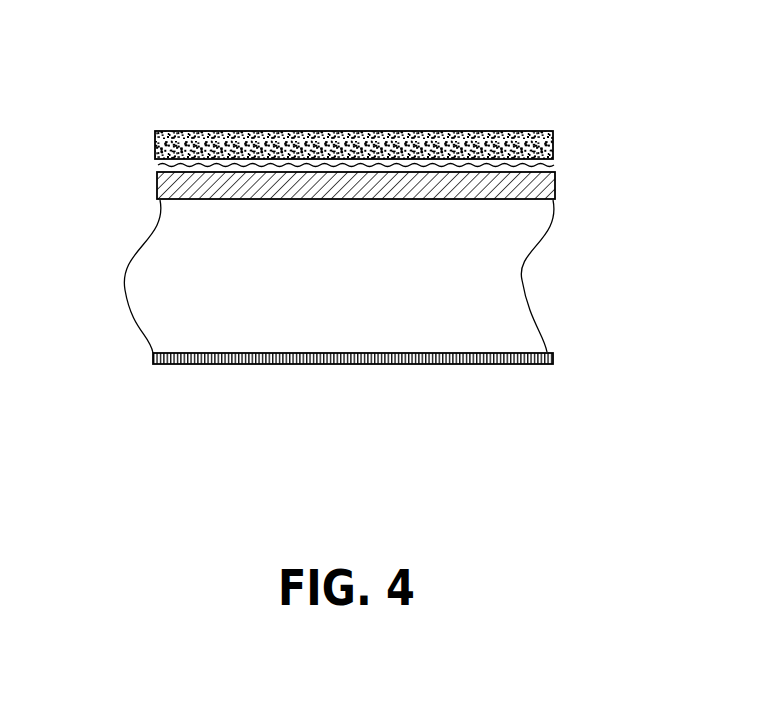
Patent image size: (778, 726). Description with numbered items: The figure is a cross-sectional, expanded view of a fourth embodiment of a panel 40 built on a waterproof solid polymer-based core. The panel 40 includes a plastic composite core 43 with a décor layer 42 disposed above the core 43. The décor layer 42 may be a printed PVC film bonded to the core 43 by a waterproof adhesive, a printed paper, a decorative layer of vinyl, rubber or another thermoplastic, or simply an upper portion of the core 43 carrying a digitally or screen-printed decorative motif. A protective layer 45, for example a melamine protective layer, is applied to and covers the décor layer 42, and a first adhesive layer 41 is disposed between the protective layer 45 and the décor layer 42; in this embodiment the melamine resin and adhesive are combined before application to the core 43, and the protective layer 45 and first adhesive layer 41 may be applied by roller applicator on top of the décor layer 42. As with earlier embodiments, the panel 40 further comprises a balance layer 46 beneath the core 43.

The panel 40 is at (157, 126).
The first adhesive layer 41 is at (550, 164).
The décor layer 42 is at (543, 190).
The plastic composite core 43 is at (172, 265).
The protective layer 45 is at (527, 140).
The balance layer 46 is at (153, 353).